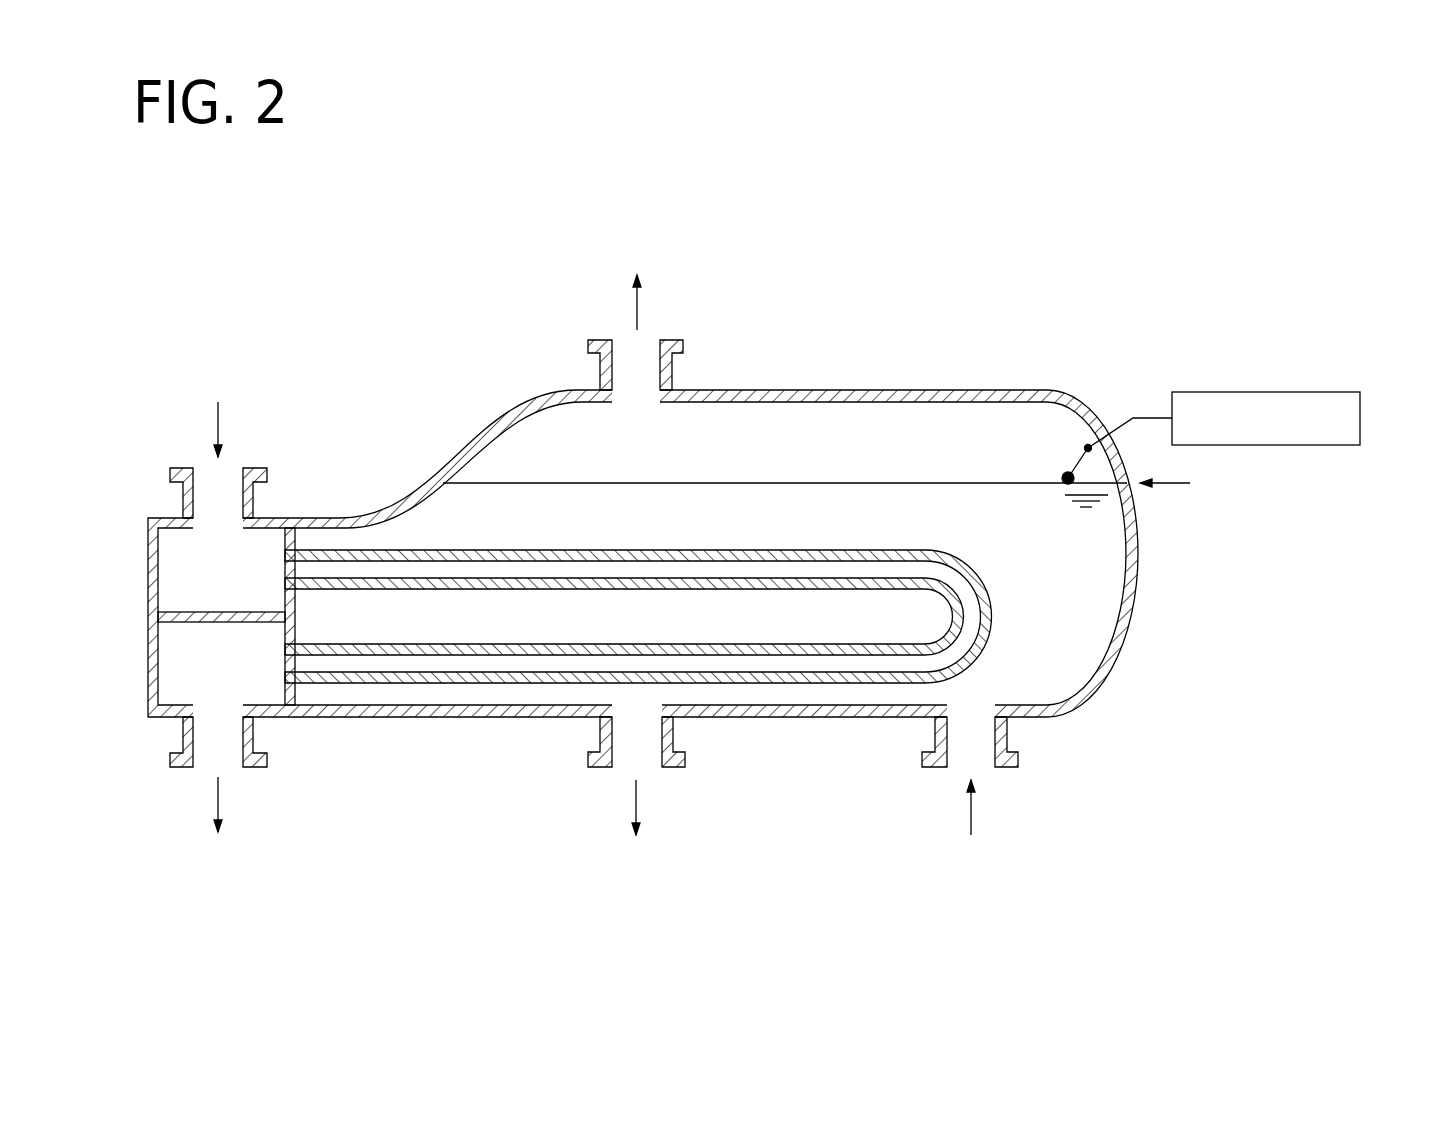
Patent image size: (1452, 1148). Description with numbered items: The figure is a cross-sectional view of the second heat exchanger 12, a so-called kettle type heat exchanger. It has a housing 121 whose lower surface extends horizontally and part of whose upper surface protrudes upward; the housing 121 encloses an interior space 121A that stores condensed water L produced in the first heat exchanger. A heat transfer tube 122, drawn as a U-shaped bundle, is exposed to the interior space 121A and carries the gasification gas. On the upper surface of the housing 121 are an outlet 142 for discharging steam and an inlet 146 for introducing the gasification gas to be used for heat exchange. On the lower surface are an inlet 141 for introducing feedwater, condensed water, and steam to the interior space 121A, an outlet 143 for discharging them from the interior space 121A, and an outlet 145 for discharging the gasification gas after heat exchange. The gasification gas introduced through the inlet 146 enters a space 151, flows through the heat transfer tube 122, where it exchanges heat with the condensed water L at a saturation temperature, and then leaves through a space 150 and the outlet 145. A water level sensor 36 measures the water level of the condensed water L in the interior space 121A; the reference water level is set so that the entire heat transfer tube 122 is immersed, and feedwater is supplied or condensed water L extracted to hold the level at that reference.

The second heat exchanger 12 is at (1194, 197).
The water level sensor 36 is at (1332, 390).
The housing 121 is at (1138, 572).
The interior space 121A is at (828, 462).
The heat transfer tube 122 is at (810, 684).
The inlet 141 is at (995, 778).
The outlet 142 is at (657, 327).
The outlet 143 is at (660, 778).
The outlet 145 is at (240, 781).
The inlet 146 is at (237, 457).
The space 150 is at (245, 678).
The space 151 is at (245, 585).
The condensed water L is at (1087, 635).